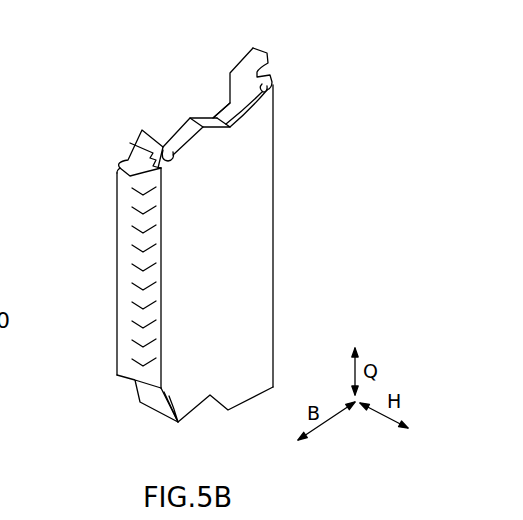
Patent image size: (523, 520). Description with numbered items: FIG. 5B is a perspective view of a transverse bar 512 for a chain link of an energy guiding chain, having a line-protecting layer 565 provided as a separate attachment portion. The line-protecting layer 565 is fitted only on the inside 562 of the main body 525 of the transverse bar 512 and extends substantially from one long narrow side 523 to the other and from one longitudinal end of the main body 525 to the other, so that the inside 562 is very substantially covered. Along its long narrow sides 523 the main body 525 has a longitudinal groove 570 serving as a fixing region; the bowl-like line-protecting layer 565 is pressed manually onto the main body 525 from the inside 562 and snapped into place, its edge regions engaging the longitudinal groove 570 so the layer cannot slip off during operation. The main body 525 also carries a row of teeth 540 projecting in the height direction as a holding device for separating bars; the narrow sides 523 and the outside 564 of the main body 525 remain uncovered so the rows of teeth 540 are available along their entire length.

The transverse bar 512 is at (323, 95).
The inside of the main body 562 is at (292, 238).
The line-protecting layer 565 is at (262, 297).
The outside of the main body 564 is at (86, 203).
The long narrow side 523 is at (118, 283).
The row of teeth 540 is at (140, 236).
The longitudinal groove 570 is at (148, 148).
The main body 525 is at (188, 130).